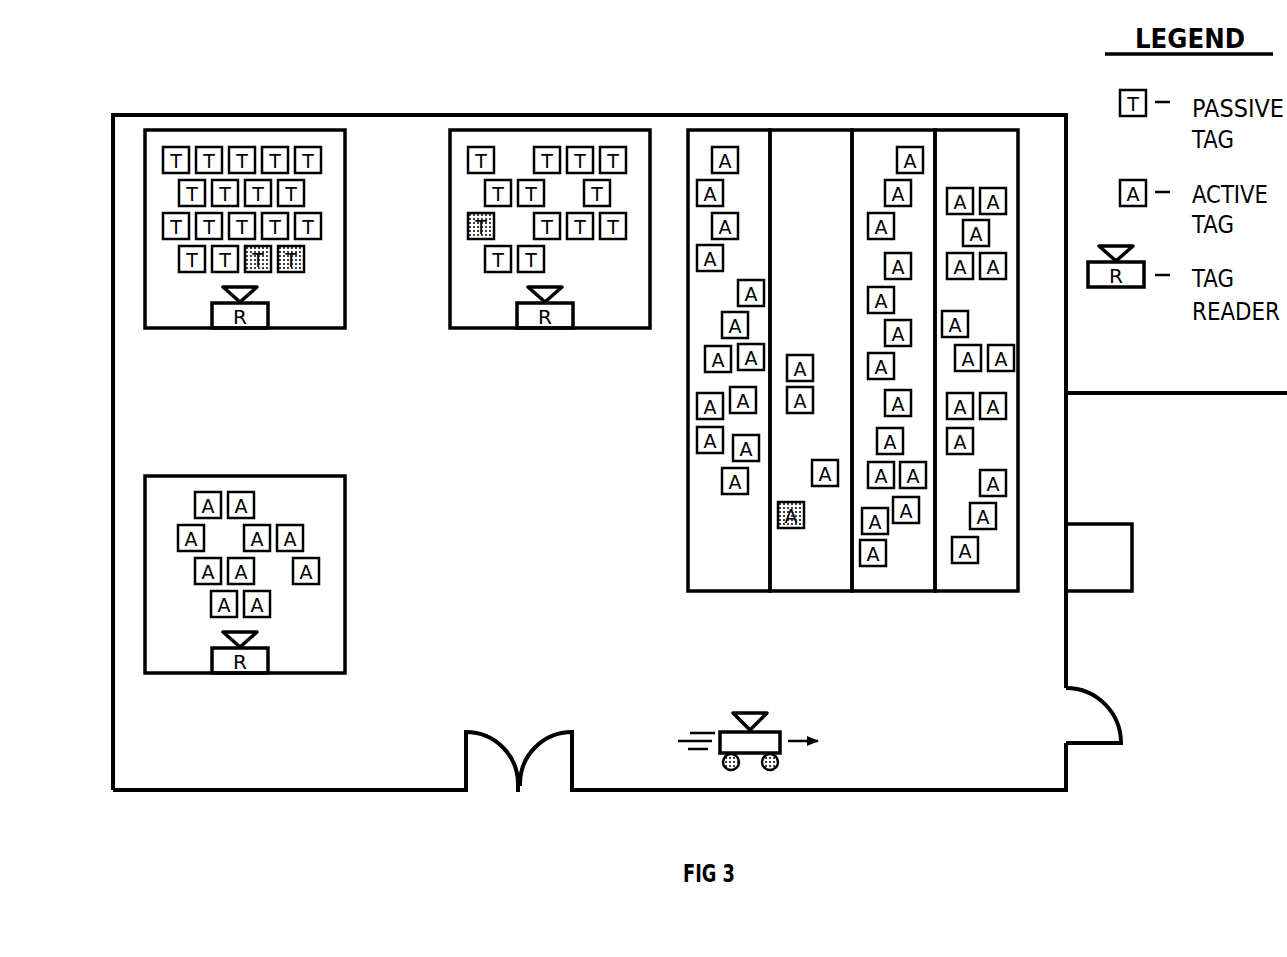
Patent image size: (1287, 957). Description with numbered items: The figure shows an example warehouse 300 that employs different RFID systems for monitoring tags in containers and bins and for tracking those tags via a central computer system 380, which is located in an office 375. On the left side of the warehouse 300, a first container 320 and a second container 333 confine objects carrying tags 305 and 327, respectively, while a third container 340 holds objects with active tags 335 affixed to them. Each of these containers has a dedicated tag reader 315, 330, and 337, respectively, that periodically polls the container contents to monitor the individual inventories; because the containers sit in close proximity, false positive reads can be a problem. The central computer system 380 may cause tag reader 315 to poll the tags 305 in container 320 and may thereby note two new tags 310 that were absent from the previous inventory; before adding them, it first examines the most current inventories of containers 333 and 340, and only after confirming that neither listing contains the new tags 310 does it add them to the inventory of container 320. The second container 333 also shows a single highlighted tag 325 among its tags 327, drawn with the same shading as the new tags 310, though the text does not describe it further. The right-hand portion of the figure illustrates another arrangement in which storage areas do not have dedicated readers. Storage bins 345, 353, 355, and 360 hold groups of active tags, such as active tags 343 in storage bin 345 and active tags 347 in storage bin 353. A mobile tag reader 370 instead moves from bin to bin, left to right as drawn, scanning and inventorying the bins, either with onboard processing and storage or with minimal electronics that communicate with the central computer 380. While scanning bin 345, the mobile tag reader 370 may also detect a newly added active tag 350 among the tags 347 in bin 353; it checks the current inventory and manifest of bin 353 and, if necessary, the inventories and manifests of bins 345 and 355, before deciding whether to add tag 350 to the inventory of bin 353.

The warehouse 300 is at (117, 820).
The tags 305 is at (208, 280).
The new tags 310 is at (300, 272).
The tag reader 315 is at (258, 330).
The first container 320 is at (190, 330).
The passive tag (flagged) 325 is at (472, 228).
The tags 327 is at (597, 263).
The tag reader 330 is at (567, 330).
The second container 333 is at (498, 330).
The active tags 335 is at (300, 603).
The tag reader 337 is at (253, 675).
The third container 340 is at (192, 675).
The active tags 343 is at (723, 517).
The storage bin 345 is at (712, 593).
The active tags 347 is at (810, 275).
The active tag 350 is at (788, 525).
The storage bin 353 is at (797, 593).
The storage bin 355 is at (880, 593).
The storage bin 360 is at (963, 593).
The mobile tag reader 370 is at (773, 730).
The office 375 is at (1156, 470).
The central computer system 380 is at (1120, 592).